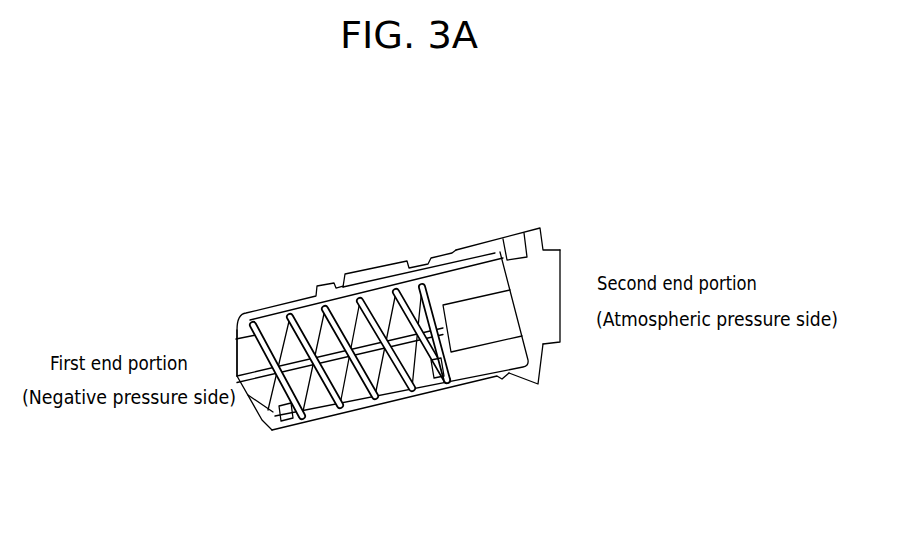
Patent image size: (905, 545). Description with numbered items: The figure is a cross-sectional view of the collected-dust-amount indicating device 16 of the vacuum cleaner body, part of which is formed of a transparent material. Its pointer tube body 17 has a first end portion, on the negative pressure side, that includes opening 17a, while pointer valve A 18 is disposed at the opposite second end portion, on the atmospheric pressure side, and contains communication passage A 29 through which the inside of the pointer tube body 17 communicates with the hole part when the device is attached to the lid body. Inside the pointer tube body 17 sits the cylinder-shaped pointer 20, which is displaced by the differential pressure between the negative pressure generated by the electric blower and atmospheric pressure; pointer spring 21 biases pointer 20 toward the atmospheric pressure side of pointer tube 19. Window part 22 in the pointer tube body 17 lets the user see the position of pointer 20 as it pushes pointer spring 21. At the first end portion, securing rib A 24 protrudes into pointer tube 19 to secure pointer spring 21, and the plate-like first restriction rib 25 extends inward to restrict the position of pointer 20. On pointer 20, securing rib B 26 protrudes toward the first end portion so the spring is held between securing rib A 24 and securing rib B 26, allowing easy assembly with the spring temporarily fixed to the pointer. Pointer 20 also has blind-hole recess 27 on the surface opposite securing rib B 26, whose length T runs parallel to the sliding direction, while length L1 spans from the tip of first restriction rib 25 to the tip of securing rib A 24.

The collected-dust-amount indicating device 16 is at (701, 497).
The pointer tube body 17 is at (485, 376).
The opening 17a is at (257, 359).
The pointer valve A 18 is at (540, 384).
The pointer tube 19 is at (590, 452).
The pointer 20 is at (508, 352).
The pointer spring 21 is at (370, 392).
The window part 22 is at (374, 270).
The securing rib A 24 is at (289, 414).
The first restriction rib 25 is at (290, 362).
The securing rib B 26 is at (434, 362).
The recess 27 is at (465, 306).
The communication passage A 29 is at (540, 296).
The length of recess T is at (455, 330).
The length of first restriction rib L1 is at (338, 330).